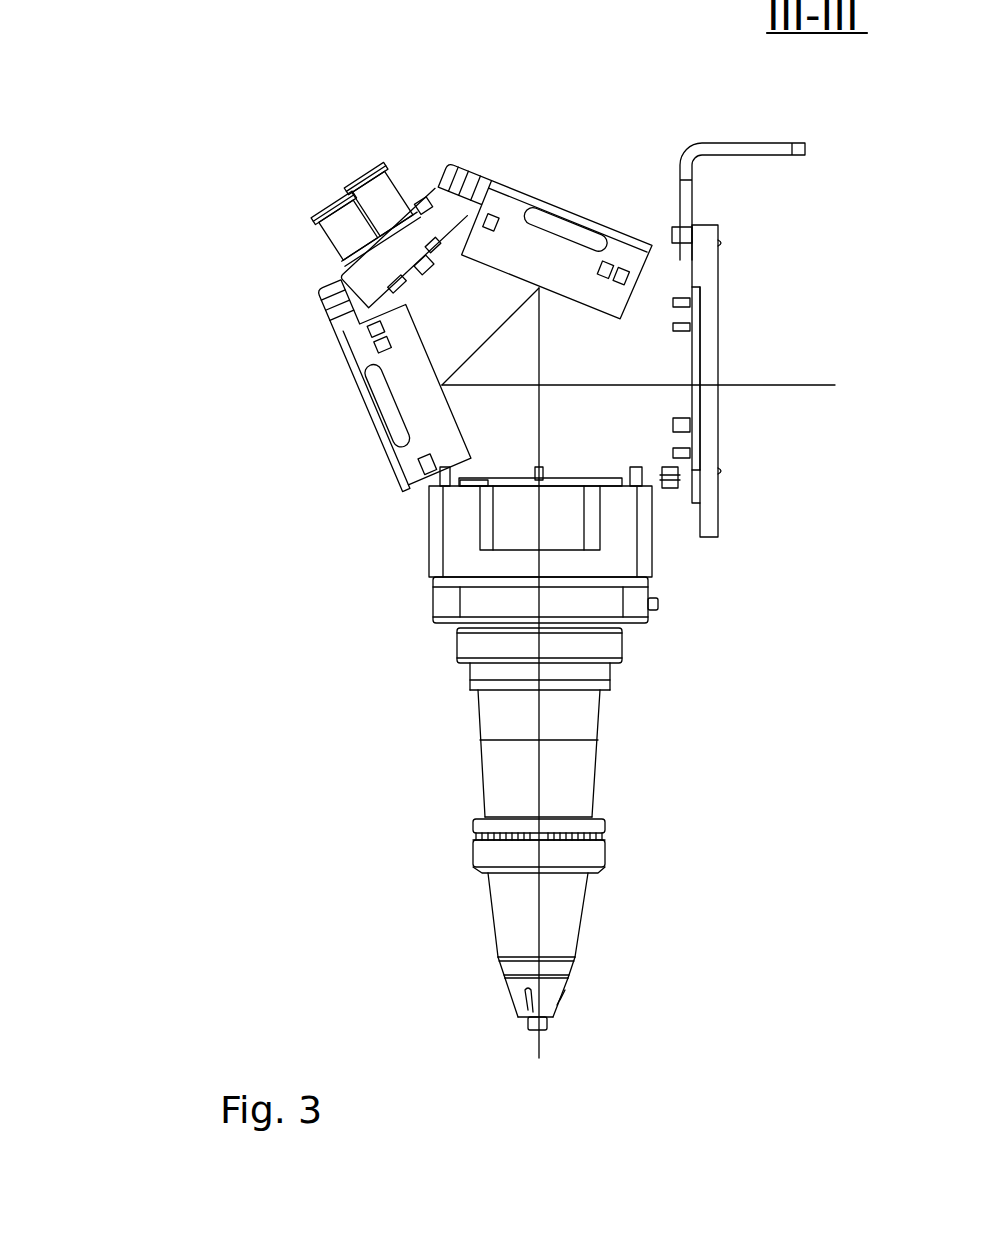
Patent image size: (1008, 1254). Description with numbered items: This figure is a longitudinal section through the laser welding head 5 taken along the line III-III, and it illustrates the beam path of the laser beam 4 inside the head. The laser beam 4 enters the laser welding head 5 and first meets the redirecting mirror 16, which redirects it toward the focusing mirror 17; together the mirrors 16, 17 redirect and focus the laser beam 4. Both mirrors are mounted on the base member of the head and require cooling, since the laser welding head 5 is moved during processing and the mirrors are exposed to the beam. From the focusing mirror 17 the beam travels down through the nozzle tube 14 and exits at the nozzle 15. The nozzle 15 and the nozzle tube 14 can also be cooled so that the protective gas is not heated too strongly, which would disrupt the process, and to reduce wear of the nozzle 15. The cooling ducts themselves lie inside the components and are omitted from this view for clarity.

The laser welding head 5 is at (246, 290).
The laser beam 4 is at (750, 387).
The nozzle tube 14 is at (503, 783).
The nozzle 15 is at (553, 1015).
The redirecting mirror 16 is at (407, 402).
The focusing mirror 17 is at (543, 248).